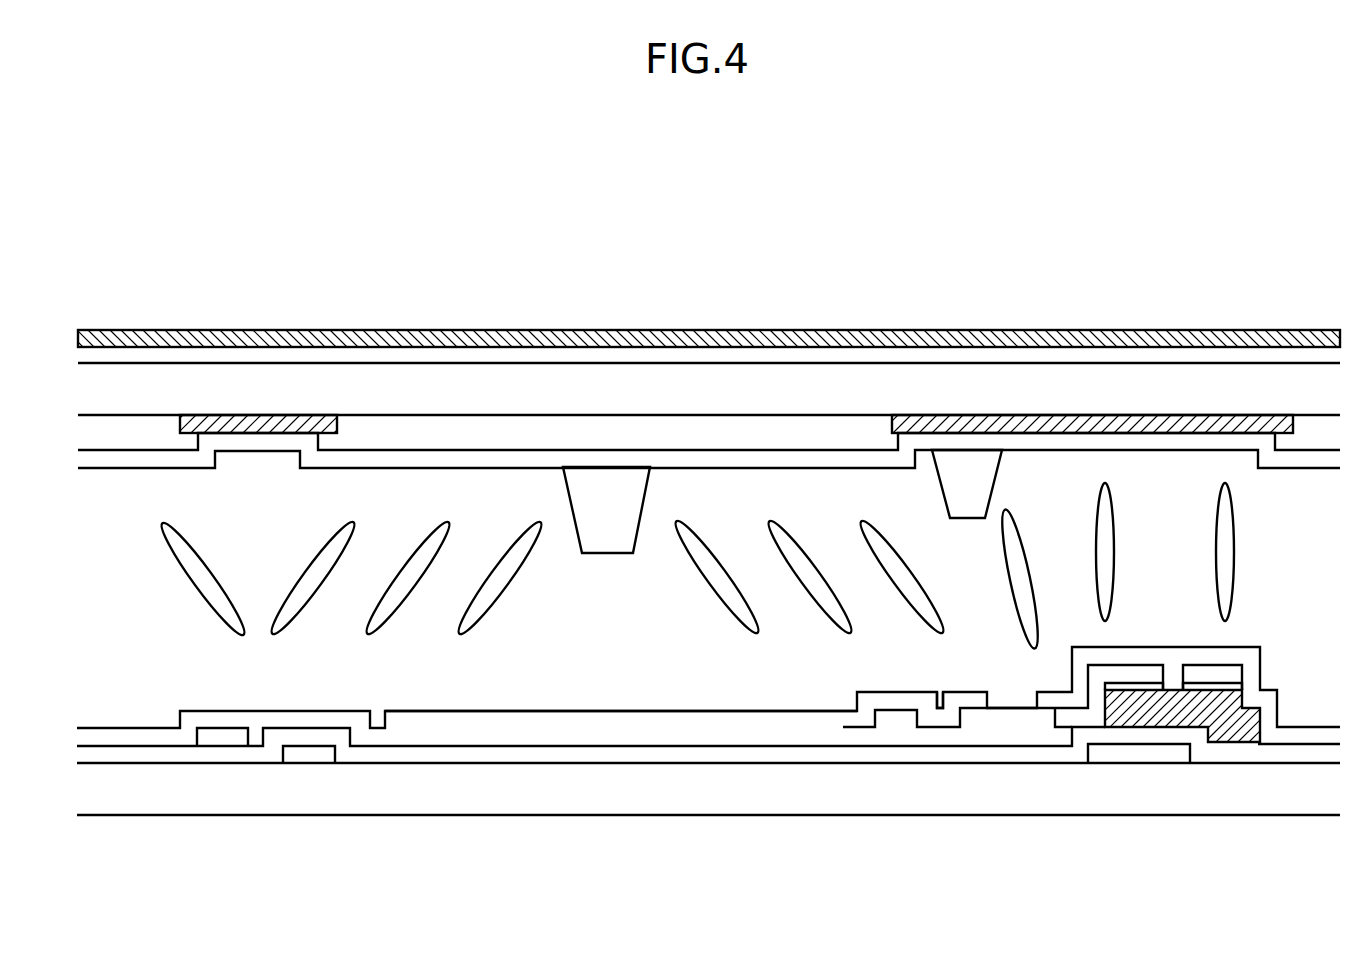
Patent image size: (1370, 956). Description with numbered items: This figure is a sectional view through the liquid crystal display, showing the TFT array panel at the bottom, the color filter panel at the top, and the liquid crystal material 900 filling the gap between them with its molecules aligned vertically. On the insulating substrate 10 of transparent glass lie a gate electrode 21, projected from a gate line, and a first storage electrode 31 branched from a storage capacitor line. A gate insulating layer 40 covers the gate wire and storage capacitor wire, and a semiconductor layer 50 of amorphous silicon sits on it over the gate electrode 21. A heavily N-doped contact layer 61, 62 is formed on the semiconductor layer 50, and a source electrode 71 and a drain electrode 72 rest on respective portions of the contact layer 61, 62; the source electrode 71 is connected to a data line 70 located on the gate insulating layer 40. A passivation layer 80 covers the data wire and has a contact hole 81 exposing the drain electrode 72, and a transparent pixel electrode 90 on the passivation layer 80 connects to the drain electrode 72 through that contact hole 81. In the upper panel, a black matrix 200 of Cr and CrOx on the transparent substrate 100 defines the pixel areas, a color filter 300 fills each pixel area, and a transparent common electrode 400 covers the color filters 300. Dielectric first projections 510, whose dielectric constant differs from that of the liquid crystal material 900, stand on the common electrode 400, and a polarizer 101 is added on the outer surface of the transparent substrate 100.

The insulating substrate 10 is at (735, 795).
The gate electrode 21 is at (1140, 755).
The first storage electrode 31 is at (313, 765).
The gate insulating layer 40 is at (610, 763).
The semiconductor layer 50 is at (1245, 745).
The contact layer 61 is at (1195, 663).
The contact layer 62 is at (1150, 664).
The data line 70 is at (225, 735).
The source electrode 71 is at (1230, 663).
The drain electrode 72 is at (1097, 663).
The passivation layer 80 is at (500, 735).
The contact hole 81 is at (940, 691).
The pixel electrode 90 is at (652, 720).
The transparent substrate 100 is at (805, 370).
The polarizer 101 is at (738, 340).
The black matrix 200 is at (1100, 415).
The color filter 300 is at (405, 436).
The common electrode 400 is at (478, 460).
The first projection 510 is at (612, 483).
The liquid crystal material 900 is at (1280, 570).